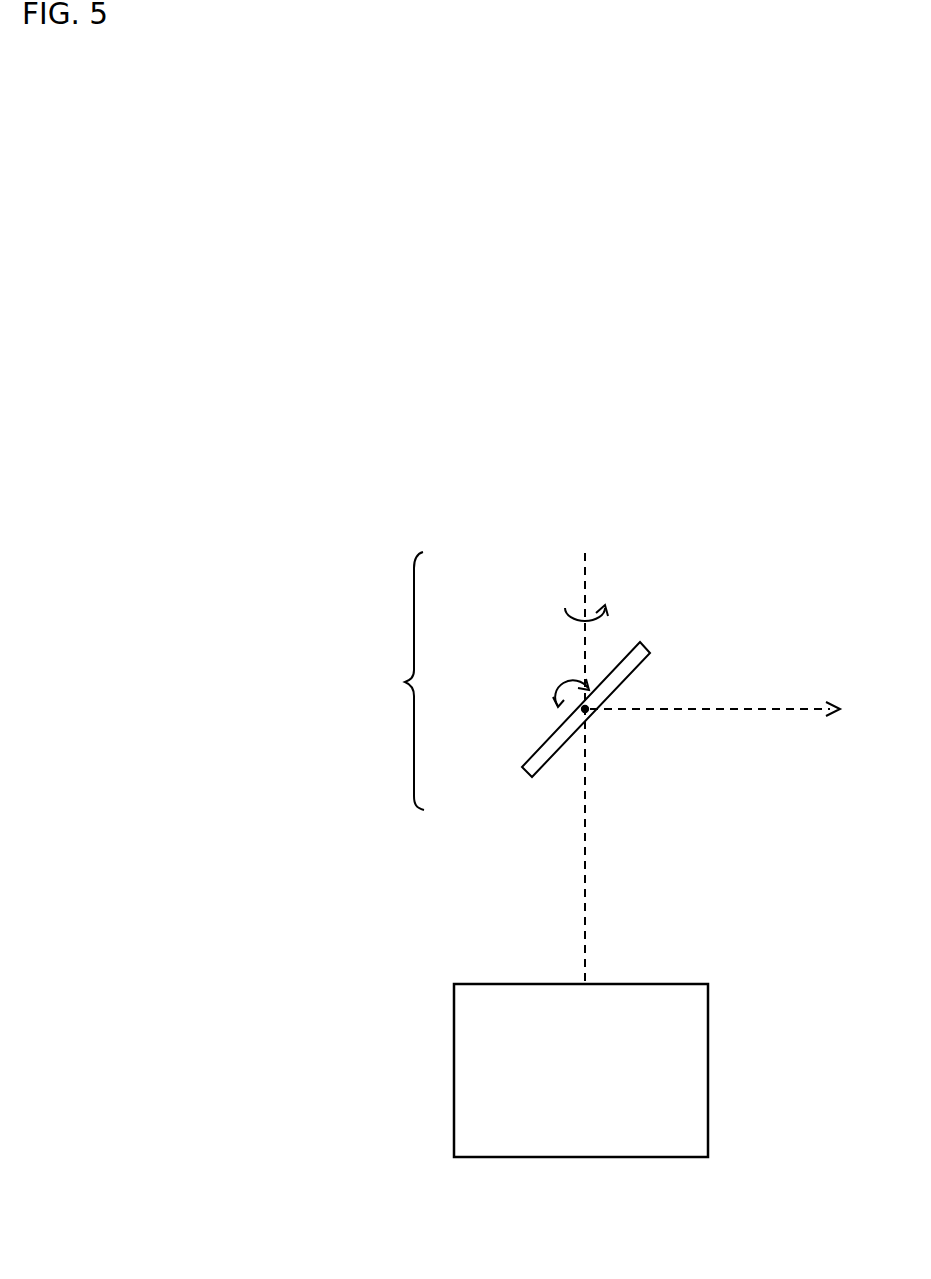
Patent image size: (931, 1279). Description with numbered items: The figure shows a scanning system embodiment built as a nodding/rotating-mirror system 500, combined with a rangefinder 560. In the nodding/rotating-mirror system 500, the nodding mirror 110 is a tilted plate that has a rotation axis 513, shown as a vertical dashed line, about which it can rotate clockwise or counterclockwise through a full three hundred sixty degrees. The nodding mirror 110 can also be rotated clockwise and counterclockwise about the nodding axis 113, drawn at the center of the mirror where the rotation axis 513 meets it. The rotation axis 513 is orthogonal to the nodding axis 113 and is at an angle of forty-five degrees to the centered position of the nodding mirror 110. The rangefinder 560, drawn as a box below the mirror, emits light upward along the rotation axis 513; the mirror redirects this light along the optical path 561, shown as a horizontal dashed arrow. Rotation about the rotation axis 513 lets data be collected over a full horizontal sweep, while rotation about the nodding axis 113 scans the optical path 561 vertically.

The nodding/rotating-mirror system 500 is at (383, 681).
The rotation axis 513 is at (585, 590).
The nodding mirror 110 is at (523, 768).
The nodding axis 113 is at (587, 713).
The optical path 561 is at (750, 708).
The rangefinder 560 is at (708, 1071).